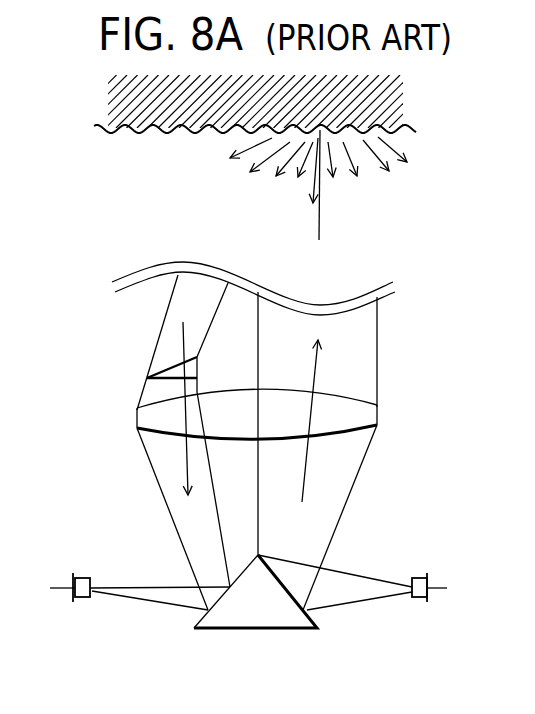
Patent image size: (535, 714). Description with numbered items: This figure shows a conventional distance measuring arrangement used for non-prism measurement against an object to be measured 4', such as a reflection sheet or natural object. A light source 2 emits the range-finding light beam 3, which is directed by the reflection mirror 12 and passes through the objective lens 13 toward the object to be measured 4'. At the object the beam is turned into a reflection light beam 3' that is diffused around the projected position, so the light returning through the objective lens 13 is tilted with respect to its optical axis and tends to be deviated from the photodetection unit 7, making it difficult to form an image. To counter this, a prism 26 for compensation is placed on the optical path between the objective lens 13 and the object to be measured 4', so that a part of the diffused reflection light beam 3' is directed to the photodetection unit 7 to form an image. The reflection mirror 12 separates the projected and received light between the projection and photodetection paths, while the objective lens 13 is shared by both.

The object to be measured 4' is at (262, 104).
The range-finding light beam 3 is at (285, 436).
The reflection light beam 3' is at (125, 442).
The prism for compensation 26 is at (170, 372).
The objective lens 13 is at (377, 410).
The reflection mirror 12 is at (253, 630).
The photodetection unit 7 is at (79, 578).
The light source 2 is at (420, 578).